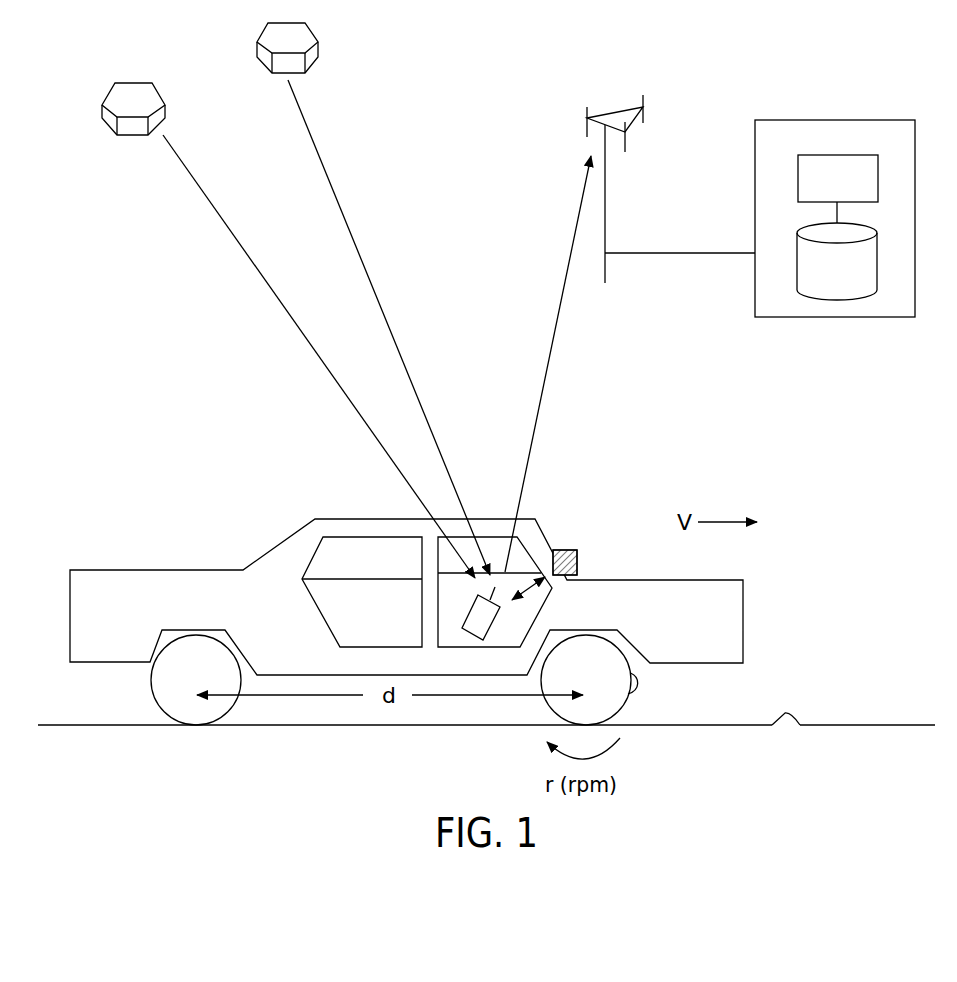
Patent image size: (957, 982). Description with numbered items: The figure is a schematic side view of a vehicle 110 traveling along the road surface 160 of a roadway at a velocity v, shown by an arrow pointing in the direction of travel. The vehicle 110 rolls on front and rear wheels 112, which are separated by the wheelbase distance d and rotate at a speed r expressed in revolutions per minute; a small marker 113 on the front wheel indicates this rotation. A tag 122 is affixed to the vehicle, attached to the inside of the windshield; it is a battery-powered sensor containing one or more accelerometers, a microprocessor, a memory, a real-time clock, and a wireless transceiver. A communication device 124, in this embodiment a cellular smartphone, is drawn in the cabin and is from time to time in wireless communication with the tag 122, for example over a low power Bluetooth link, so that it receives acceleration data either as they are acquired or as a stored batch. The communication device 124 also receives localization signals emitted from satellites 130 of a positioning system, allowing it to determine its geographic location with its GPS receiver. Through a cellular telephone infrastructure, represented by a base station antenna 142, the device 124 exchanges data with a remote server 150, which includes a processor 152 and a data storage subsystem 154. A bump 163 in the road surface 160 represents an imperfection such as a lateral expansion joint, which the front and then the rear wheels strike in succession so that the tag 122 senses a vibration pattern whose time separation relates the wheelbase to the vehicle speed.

The vehicle 110 is at (157, 570).
The wheel 112 is at (227, 717).
The wheel marker 113 is at (638, 690).
The tag 122 is at (565, 550).
The communication device 124 is at (490, 622).
The satellites 130 is at (102, 107).
The base station antenna 142 is at (607, 195).
The remote server 150 is at (837, 120).
The processor 152 is at (842, 152).
The data storage subsystem 154 is at (853, 233).
The road surface 160 is at (373, 727).
The road bump 163 is at (782, 722).